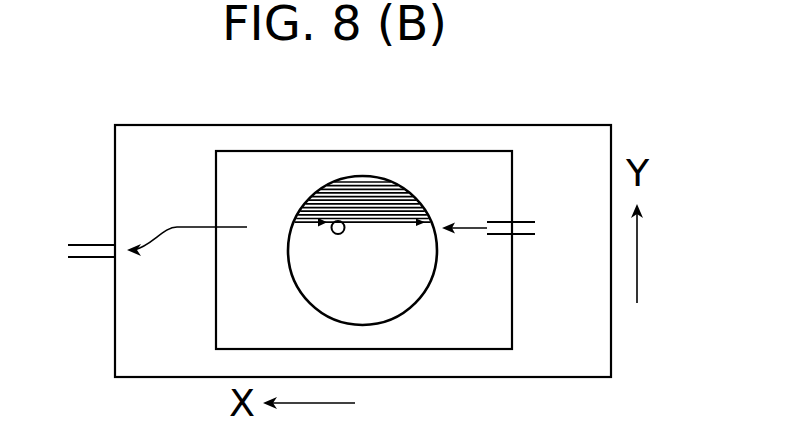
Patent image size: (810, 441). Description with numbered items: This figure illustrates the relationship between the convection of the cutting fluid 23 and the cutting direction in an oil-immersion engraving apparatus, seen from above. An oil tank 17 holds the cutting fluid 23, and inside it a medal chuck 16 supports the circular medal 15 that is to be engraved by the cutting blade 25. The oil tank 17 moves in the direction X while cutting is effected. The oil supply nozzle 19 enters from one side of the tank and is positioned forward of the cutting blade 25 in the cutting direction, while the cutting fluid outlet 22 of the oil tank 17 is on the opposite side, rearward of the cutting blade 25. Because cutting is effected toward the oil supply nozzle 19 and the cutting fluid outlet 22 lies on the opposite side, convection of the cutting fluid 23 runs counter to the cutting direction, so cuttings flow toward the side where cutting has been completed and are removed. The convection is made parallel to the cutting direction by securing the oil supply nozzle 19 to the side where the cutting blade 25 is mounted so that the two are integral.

The medal 15 is at (415, 271).
The medal chuck 16 is at (389, 152).
The oil tank 17 is at (220, 126).
The oil supply nozzle 19 is at (517, 222).
The cutting fluid outlet 22 is at (113, 244).
The cutting fluid 23 is at (590, 328).
The cutting blade 25 is at (335, 234).